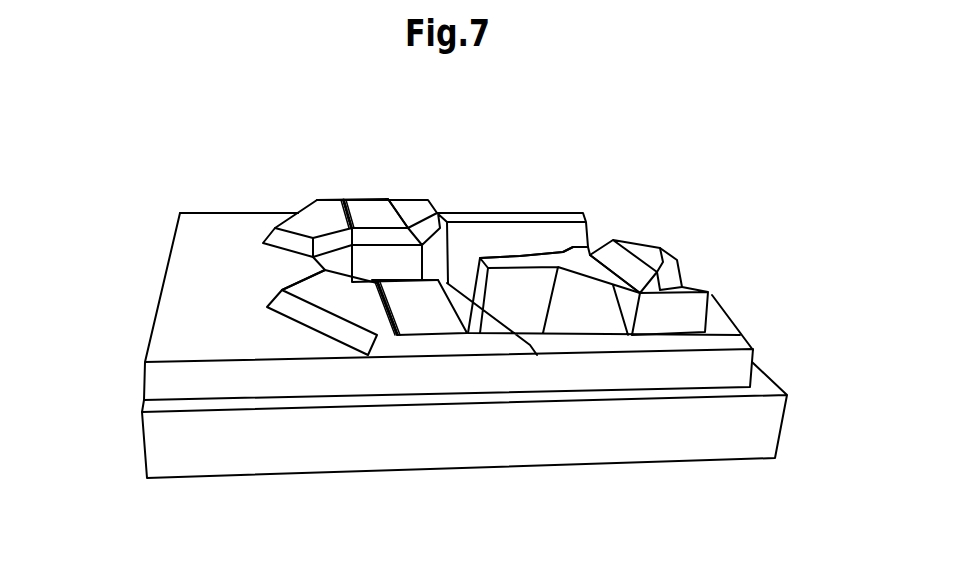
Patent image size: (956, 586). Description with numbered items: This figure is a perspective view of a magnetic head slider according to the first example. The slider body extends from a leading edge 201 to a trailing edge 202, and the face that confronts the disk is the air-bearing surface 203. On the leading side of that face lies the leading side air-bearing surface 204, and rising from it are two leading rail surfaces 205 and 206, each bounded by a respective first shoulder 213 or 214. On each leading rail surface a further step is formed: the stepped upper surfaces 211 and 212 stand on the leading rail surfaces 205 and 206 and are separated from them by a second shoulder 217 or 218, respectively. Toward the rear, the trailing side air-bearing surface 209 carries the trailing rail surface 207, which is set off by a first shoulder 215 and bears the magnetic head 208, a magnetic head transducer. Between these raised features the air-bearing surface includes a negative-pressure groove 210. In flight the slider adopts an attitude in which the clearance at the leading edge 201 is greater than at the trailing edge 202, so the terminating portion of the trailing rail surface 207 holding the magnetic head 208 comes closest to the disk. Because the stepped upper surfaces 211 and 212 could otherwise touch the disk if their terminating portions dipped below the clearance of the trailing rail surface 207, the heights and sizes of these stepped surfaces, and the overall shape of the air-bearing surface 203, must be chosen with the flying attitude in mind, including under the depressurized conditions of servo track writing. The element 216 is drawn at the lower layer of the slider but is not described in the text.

The leading edge 201 is at (157, 307).
The trailing edge 202 is at (730, 322).
The air-bearing surface 203 is at (443, 179).
The leading side air-bearing surface 204 is at (197, 237).
The leading rail surface 205 is at (313, 217).
The leading rail surface 206 is at (337, 300).
The trailing rail surface 207 is at (640, 250).
The magnetic head 208 is at (667, 257).
The trailing side air-bearing surface 209 is at (576, 258).
The negative-pressure groove 210 is at (593, 245).
The stepped upper surface 211 is at (368, 213).
The stepped upper surface 212 is at (427, 312).
The first shoulder 213 is at (283, 238).
The first shoulder 214 is at (267, 307).
The first shoulder 215 is at (625, 263).
The base layer 216 is at (148, 387).
The second shoulder 217 is at (344, 200).
The second shoulder 218 is at (380, 333).